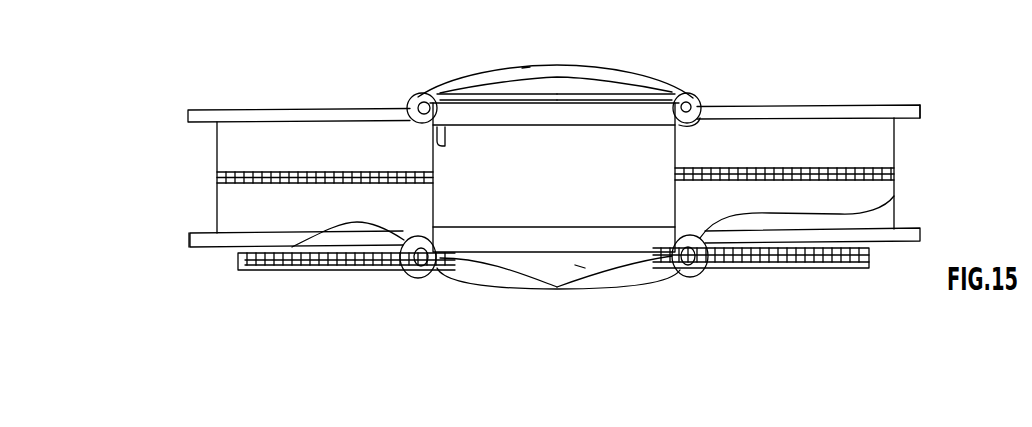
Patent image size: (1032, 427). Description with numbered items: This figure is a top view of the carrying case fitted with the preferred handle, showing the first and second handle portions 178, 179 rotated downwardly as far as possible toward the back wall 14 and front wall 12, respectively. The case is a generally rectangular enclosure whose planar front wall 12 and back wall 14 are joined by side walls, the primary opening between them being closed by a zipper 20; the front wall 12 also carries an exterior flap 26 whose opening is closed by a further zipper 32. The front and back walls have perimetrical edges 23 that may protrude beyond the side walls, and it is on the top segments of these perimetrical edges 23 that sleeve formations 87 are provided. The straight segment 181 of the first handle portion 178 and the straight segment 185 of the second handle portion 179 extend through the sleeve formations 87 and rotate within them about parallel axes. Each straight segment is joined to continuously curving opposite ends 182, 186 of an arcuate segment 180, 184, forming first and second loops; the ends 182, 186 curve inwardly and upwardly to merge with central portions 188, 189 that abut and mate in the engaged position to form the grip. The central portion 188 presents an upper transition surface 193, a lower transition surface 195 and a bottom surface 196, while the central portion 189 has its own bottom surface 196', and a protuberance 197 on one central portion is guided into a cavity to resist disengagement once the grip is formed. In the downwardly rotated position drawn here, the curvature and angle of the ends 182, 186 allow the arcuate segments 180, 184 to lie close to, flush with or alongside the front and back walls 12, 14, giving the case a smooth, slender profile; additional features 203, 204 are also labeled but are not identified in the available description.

The front wall 12 is at (223, 247).
The back wall 14 is at (862, 105).
The zipper 20 is at (247, 170).
The perimetrical edges 23 is at (908, 105).
The exterior flap 26 is at (790, 270).
The zipper 32 is at (840, 256).
The sleeve formations 87 is at (437, 147).
The first handle portion 178 is at (647, 73).
The second handle portion 179 is at (631, 286).
The arcuate segment 180 is at (443, 90).
The straight segment 181 is at (703, 124).
The continuously curving opposite ends 182 is at (412, 96).
The arcuate segment 184 is at (416, 280).
The straight segment 185 is at (679, 226).
The continuously curving opposite ends 186 is at (330, 240).
The central portion 188 is at (593, 72).
The central portion 189 is at (452, 280).
The upper transition surface 193 is at (478, 82).
The lower transition surface 195 is at (549, 92).
The bottom surface 196 is at (614, 55).
The bottom surface 196' is at (596, 299).
The protuberance 197 is at (522, 68).
The lower left grid strip 203 is at (399, 273).
The lower dome outer 204 is at (486, 288).